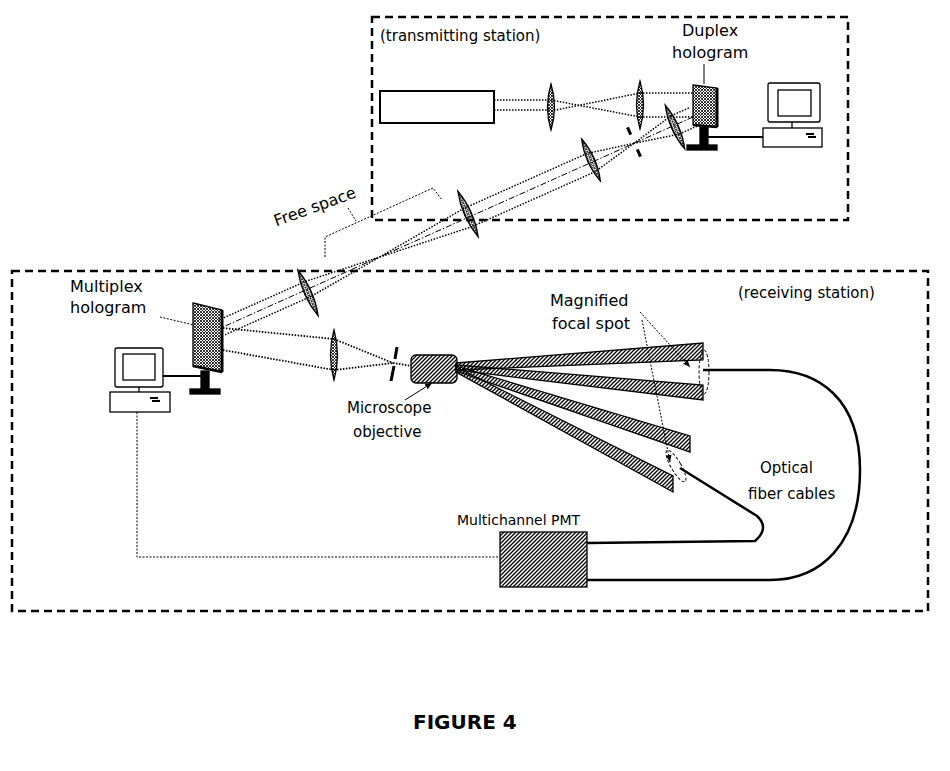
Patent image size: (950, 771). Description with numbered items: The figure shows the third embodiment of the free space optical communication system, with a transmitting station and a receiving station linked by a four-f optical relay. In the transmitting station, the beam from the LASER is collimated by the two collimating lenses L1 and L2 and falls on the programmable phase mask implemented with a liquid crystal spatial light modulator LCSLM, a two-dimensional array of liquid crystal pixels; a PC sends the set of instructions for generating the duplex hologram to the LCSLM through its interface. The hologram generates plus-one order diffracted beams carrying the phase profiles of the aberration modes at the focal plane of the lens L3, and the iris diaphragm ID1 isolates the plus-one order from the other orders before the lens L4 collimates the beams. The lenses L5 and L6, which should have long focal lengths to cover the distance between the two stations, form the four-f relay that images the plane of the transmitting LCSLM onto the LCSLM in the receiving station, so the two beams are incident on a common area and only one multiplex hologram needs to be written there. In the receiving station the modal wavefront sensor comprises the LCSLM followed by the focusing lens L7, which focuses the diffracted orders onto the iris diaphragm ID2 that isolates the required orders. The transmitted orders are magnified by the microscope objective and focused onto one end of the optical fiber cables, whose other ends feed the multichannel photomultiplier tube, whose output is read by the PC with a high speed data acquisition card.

The laser LASER is at (437, 107).
The collimating lens L1 is at (552, 97).
The collimating lens L2 is at (643, 97).
The lens L3 is at (675, 134).
The lens L4 is at (595, 171).
The relay lens L5 is at (480, 219).
The relay lens L6 is at (320, 299).
The focusing lens L7 is at (329, 363).
The iris diaphragm ID1 is at (644, 152).
The iris diaphragm ID2 is at (399, 356).
The element PC is at (466, 239).
The liquid crystal spatial light modulator LCSLM is at (463, 254).